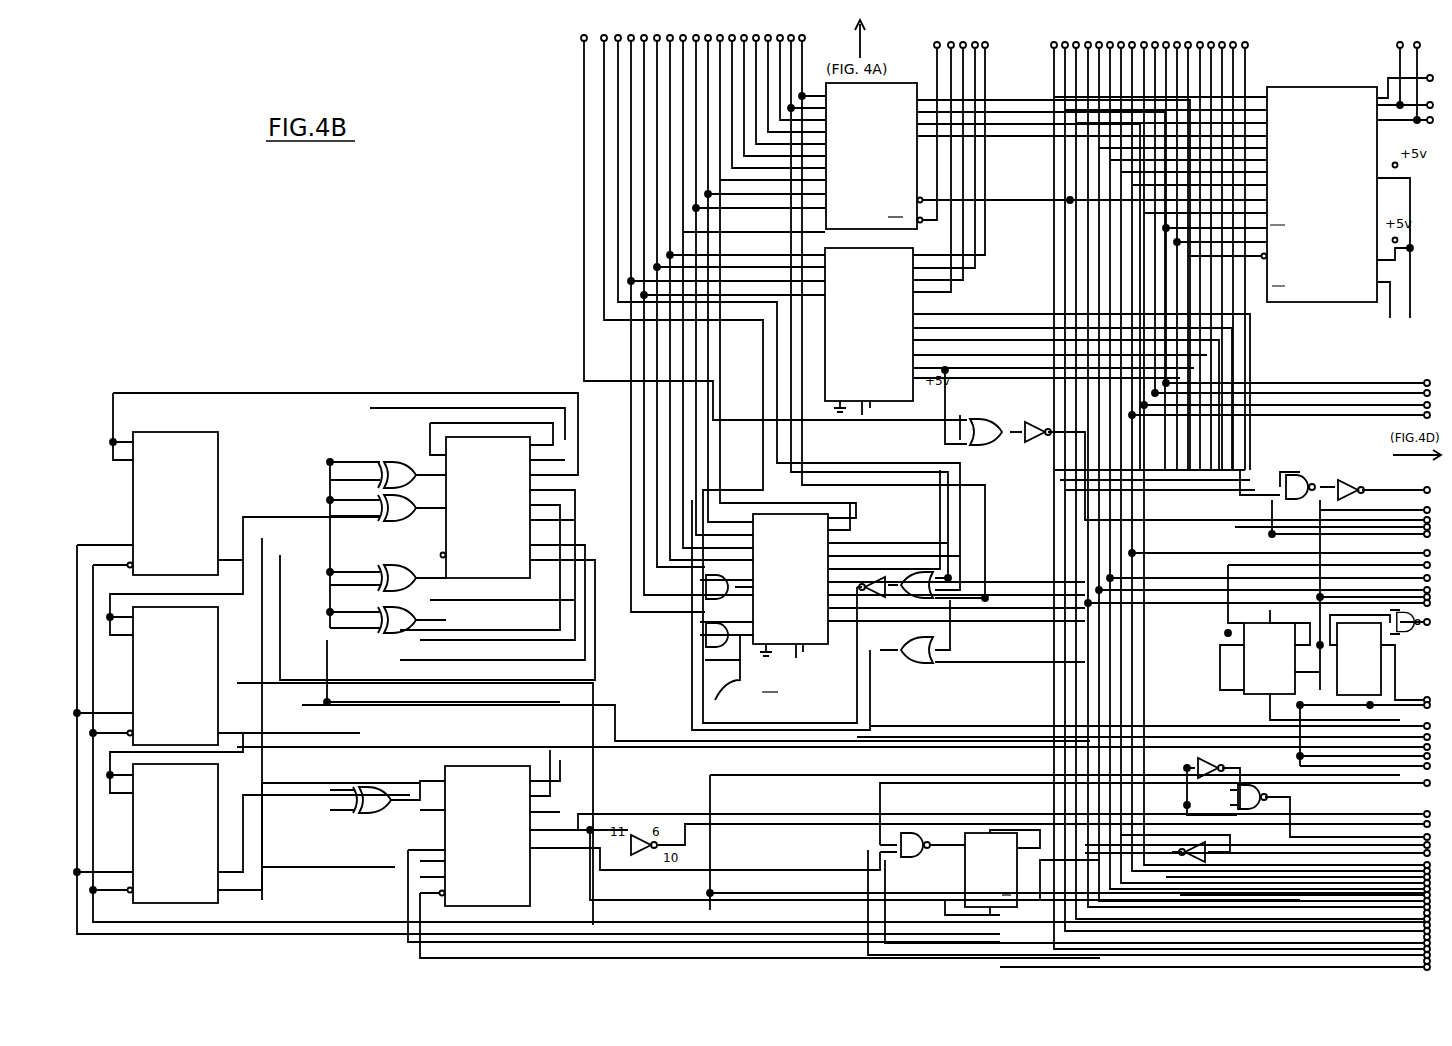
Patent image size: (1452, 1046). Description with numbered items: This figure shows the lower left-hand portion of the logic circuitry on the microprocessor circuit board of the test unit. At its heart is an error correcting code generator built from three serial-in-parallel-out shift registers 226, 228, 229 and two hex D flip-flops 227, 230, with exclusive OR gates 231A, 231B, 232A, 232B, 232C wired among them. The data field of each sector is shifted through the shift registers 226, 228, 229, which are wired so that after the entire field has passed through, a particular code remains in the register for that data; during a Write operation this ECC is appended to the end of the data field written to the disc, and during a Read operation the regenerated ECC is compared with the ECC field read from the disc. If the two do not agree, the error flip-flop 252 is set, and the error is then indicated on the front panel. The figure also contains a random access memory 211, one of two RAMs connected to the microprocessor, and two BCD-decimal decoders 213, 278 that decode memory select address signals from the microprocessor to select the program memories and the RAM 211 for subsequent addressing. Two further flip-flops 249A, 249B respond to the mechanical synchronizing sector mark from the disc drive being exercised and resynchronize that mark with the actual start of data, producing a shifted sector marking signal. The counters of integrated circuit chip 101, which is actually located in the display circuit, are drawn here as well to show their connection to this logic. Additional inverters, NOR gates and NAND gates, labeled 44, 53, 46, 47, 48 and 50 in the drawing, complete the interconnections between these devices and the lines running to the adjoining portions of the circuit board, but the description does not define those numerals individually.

The shift register 226 is at (178, 437).
The shift register 228 is at (202, 645).
The shift register 229 is at (172, 897).
The hex D flip-flop 227 is at (492, 440).
The hex D flip-flop 230 is at (500, 760).
The exclusive OR gate 231A is at (404, 466).
The exclusive OR gate 231B is at (380, 505).
The exclusive OR gate 232A is at (402, 582).
The exclusive OR gate 232B is at (382, 615).
The exclusive OR gate 232C is at (376, 814).
The random access memory 211 is at (903, 82).
The decoder 213 is at (890, 264).
The counters integrated circuit chip 101 is at (1320, 193).
The decoder 278 is at (792, 644).
The error flip-flop 252 is at (985, 833).
The flip-flop 249A is at (1244, 682).
The flip-flop 249B is at (1370, 668).
The AND gate 44 is at (719, 590).
The AND gate 53 is at (719, 635).
The inverter 46 is at (1113, 597).
The OR gate 47 is at (951, 536).
The NAND gate 48 is at (1155, 742).
The NAND gate 50 is at (1250, 671).